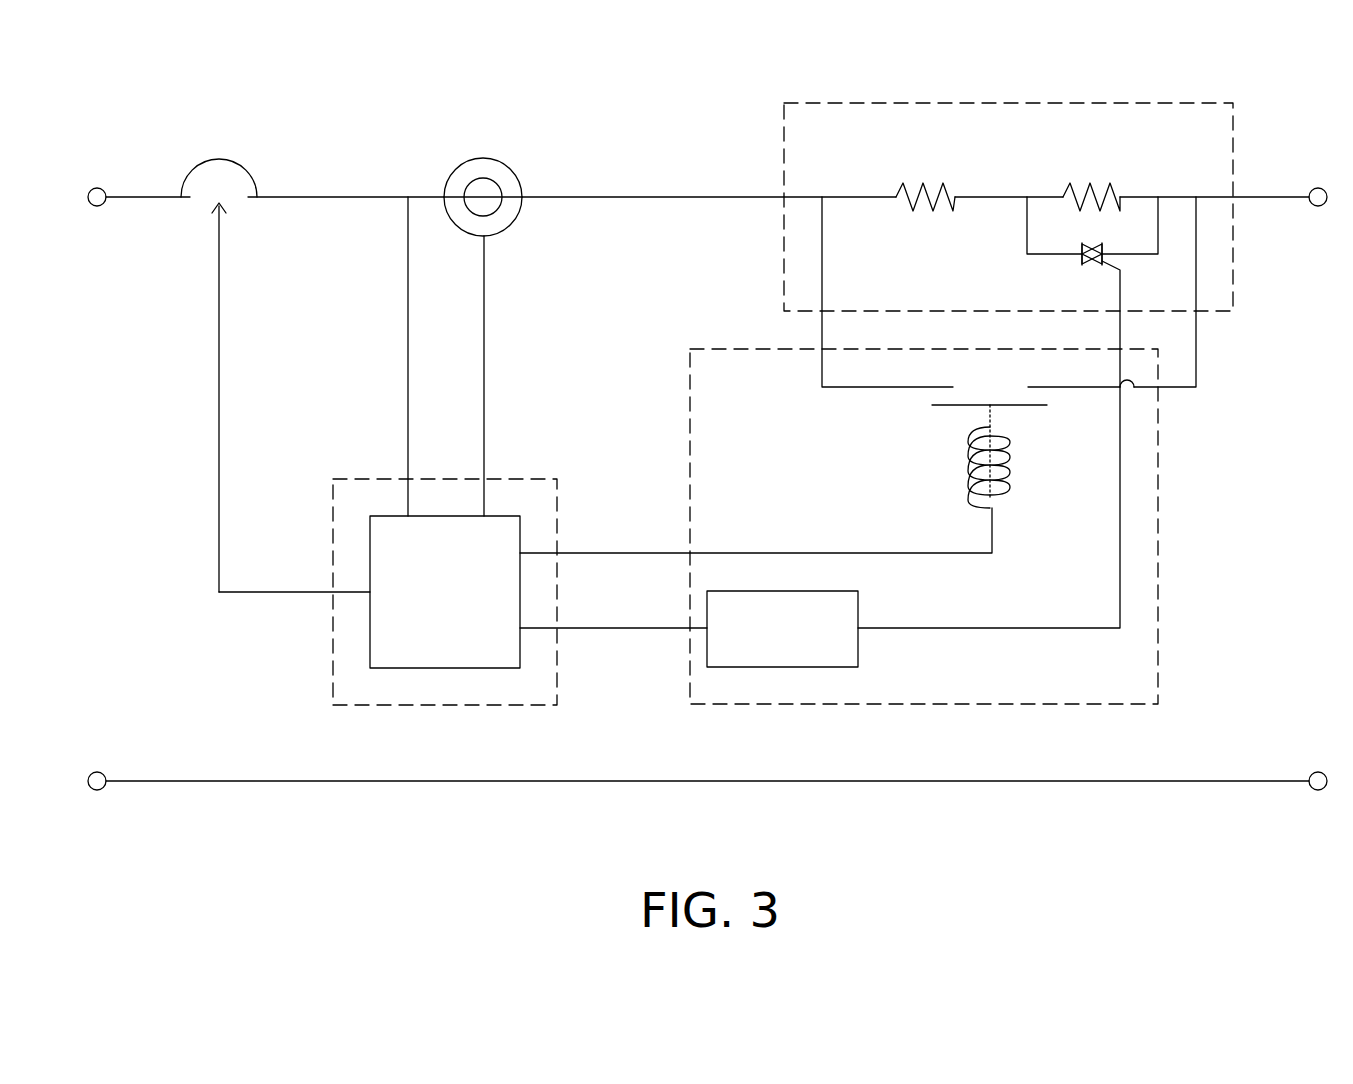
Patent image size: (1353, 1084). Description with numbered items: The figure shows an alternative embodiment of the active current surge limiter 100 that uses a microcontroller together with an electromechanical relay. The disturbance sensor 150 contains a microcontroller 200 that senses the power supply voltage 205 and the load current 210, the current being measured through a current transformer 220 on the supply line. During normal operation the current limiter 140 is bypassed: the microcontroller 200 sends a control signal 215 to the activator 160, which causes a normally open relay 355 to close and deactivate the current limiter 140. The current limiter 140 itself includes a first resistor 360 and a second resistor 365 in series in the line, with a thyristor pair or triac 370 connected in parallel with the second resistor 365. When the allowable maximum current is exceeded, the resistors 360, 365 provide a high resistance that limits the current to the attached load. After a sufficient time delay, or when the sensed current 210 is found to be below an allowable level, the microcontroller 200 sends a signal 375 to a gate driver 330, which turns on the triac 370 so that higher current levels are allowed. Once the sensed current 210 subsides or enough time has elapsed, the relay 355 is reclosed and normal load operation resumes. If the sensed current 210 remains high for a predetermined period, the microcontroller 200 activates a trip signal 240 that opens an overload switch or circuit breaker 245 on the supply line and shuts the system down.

The active current surge limiter 100 is at (436, 95).
The current limiter 140 is at (1008, 207).
The disturbance sensor 150 is at (445, 592).
The activator 160 is at (924, 526).
The microcontroller 200 is at (445, 592).
The sensed voltage 205 is at (408, 330).
The sensed current 210 is at (484, 330).
The control signal 215 is at (590, 553).
The current transformer 220 is at (483, 158).
The trip signal 240 is at (219, 405).
The circuit breaker 245 is at (219, 160).
The gate driver 330 is at (913, 464).
The relay 355 is at (938, 428).
The first resistor 360 is at (930, 196).
The second resistor 365 is at (1095, 196).
The triac 370 is at (1090, 262).
The signal 375 is at (590, 628).